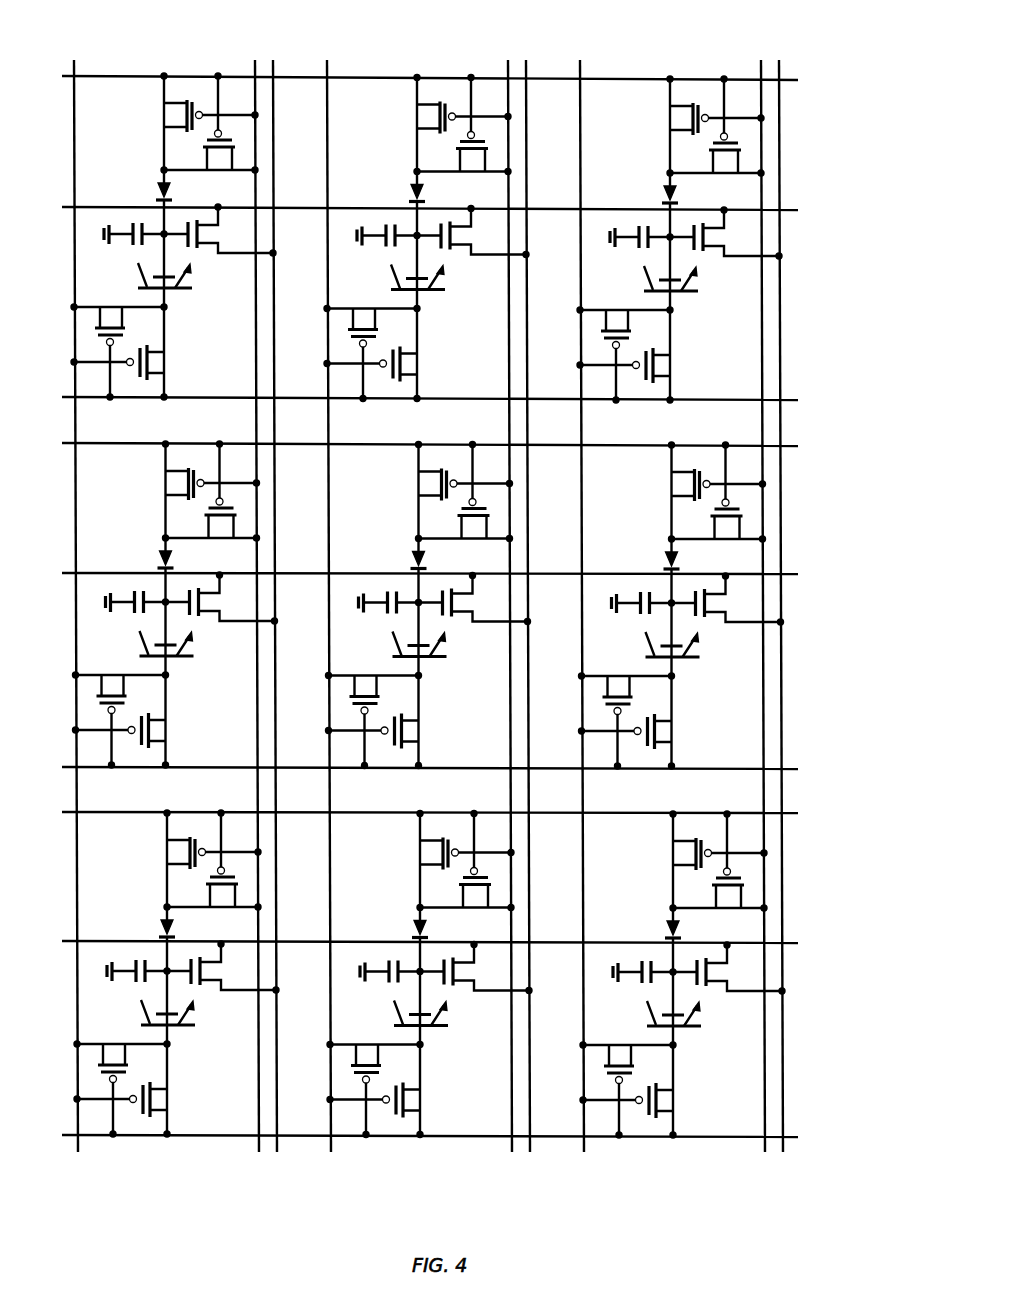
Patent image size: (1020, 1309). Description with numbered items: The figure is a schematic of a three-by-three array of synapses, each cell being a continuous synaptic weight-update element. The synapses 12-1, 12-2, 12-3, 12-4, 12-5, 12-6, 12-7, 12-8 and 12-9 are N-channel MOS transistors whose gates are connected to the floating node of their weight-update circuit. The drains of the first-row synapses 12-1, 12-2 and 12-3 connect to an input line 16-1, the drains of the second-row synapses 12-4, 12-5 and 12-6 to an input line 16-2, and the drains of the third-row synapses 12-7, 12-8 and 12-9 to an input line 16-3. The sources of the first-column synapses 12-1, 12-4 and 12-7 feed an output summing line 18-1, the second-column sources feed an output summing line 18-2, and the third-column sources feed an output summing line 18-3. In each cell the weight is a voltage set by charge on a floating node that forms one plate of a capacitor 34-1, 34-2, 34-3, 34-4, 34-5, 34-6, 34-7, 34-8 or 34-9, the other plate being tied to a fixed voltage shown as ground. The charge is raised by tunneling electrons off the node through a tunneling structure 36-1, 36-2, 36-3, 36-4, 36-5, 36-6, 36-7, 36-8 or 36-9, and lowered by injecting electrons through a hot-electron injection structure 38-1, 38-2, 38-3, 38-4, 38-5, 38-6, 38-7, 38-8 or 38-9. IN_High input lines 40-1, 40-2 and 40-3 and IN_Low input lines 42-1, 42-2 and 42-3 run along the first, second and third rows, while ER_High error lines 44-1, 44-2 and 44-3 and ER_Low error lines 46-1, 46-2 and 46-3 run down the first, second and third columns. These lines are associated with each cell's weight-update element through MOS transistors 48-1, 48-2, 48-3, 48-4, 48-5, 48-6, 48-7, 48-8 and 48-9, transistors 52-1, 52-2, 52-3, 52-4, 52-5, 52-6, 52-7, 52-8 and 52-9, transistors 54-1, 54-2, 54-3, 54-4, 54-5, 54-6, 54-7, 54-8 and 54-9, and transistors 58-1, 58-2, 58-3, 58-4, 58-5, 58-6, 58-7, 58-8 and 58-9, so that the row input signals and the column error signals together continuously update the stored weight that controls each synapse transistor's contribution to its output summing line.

The IN_High input line 40-1 is at (798, 80).
The IN_High input line 40-2 is at (798, 446).
The IN_High input line 40-3 is at (798, 813).
The input line 16-1 is at (798, 210).
The input line 16-2 is at (798, 574).
The input line 16-3 is at (798, 943).
The IN_Low input line 42-1 is at (798, 400).
The IN_Low input line 42-2 is at (798, 769).
The IN_Low input line 42-3 is at (798, 1137).
The ER_Low error line 46-1 is at (78, 1152).
The ER_Low error line 46-2 is at (331, 1152).
The ER_Low error line 46-3 is at (584, 1152).
The ER_High error line 44-1 is at (259, 1152).
The ER_High error line 44-2 is at (512, 1152).
The ER_High error line 44-3 is at (765, 1152).
The output summing line 18-1 is at (277, 1152).
The output summing line 18-2 is at (530, 1152).
The output summing line 18-3 is at (783, 1152).
The MOS transistor 48-1 is at (176, 113).
The MOS transistor 48-2 is at (433, 116).
The MOS transistor 48-3 is at (686, 117).
The MOS transistor 48-4 is at (182, 482).
The MOS transistor 48-5 is at (435, 483).
The MOS transistor 48-6 is at (688, 483).
The MOS transistor 48-7 is at (183, 851).
The MOS transistor 48-8 is at (436, 852).
The MOS transistor 48-9 is at (689, 852).
The MOS transistor 52-1 is at (215, 157).
The MOS transistor 52-2 is at (472, 167).
The MOS transistor 52-3 is at (725, 168).
The MOS transistor 52-4 is at (221, 533).
The MOS transistor 52-5 is at (474, 534).
The MOS transistor 52-6 is at (727, 534).
The MOS transistor 52-7 is at (222, 902).
The MOS transistor 52-8 is at (475, 903).
The MOS transistor 52-9 is at (728, 903).
The tunneling structure 36-1 is at (158, 193).
The tunneling structure 36-2 is at (394, 176).
The tunneling structure 36-3 is at (647, 177).
The tunneling structure 36-4 is at (143, 542).
The tunneling structure 36-5 is at (396, 543).
The tunneling structure 36-6 is at (649, 543).
The tunneling structure 36-7 is at (144, 911).
The tunneling structure 36-8 is at (397, 912).
The tunneling structure 36-9 is at (650, 912).
The capacitor 34-1 is at (134, 218).
The capacitor 34-2 is at (376, 216).
The capacitor 34-3 is at (629, 217).
The capacitor 34-4 is at (125, 582).
The capacitor 34-5 is at (378, 583).
The capacitor 34-6 is at (631, 583).
The capacitor 34-7 is at (126, 951).
The capacitor 34-8 is at (379, 952).
The capacitor 34-9 is at (632, 952).
The synapse 12-1 is at (203, 247).
The synapse 12-2 is at (471, 250).
The synapse 12-3 is at (724, 251).
The synapse 12-4 is at (220, 616).
The synapse 12-5 is at (473, 617).
The synapse 12-6 is at (726, 617).
The synapse 12-7 is at (221, 985).
The synapse 12-8 is at (474, 986).
The synapse 12-9 is at (727, 986).
The MOS transistor 58-1 is at (110, 320).
The MOS transistor 58-2 is at (372, 338).
The MOS transistor 58-3 is at (625, 339).
The MOS transistor 58-4 is at (121, 704).
The MOS transistor 58-5 is at (374, 705).
The MOS transistor 58-6 is at (627, 705).
The MOS transistor 58-7 is at (122, 1073).
The MOS transistor 58-8 is at (375, 1074).
The MOS transistor 58-9 is at (628, 1074).
The hot-electron injection structure 38-1 is at (176, 291).
The hot-electron injection structure 38-2 is at (442, 317).
The hot-electron injection structure 38-3 is at (695, 318).
The hot-electron injection structure 38-4 is at (191, 683).
The hot-electron injection structure 38-5 is at (444, 684).
The hot-electron injection structure 38-6 is at (697, 684).
The hot-electron injection structure 38-7 is at (192, 1052).
The hot-electron injection structure 38-8 is at (445, 1053).
The hot-electron injection structure 38-9 is at (698, 1053).
The MOS transistor 54-1 is at (153, 364).
The MOS transistor 54-2 is at (404, 363).
The MOS transistor 54-3 is at (657, 364).
The MOS transistor 54-4 is at (153, 729).
The MOS transistor 54-5 is at (406, 730).
The MOS transistor 54-6 is at (659, 730).
The MOS transistor 54-7 is at (154, 1098).
The MOS transistor 54-8 is at (407, 1099).
The MOS transistor 54-9 is at (660, 1099).